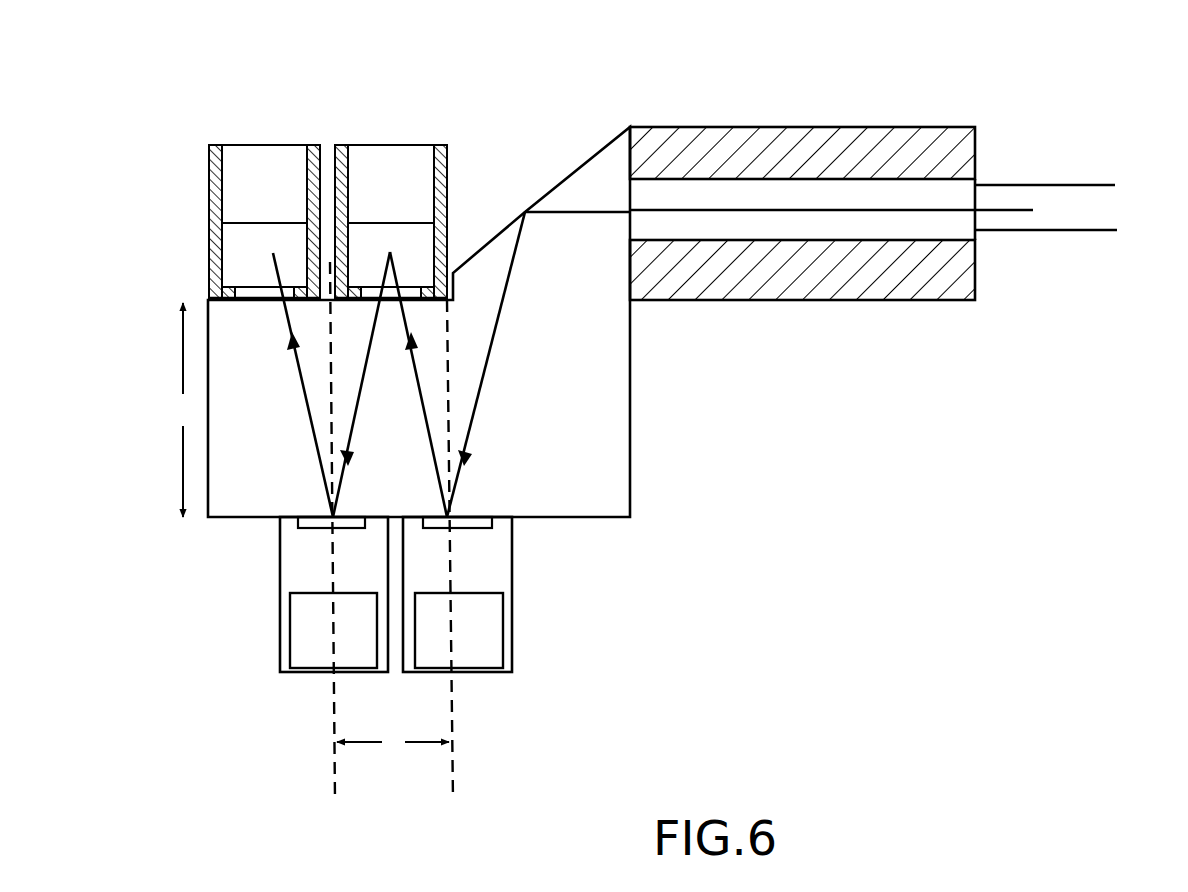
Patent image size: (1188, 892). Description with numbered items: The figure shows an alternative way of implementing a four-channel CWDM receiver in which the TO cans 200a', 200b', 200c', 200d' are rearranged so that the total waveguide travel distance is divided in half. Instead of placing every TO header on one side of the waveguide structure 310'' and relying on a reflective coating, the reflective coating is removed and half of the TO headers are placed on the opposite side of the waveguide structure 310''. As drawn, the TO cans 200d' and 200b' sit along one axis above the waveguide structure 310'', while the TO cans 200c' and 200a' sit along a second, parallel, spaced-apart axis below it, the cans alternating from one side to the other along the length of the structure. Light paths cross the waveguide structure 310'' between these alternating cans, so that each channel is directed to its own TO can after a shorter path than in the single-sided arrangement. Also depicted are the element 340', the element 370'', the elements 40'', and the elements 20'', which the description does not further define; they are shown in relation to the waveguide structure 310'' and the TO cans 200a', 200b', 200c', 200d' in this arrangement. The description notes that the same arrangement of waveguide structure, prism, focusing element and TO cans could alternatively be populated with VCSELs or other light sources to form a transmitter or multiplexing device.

The TO can 200d' is at (256, 173).
The TO can 200b' is at (385, 173).
The TO can 200c' is at (270, 597).
The TO can 200a' is at (525, 597).
The bi-directional optical fiber collimator 340' is at (802, 166).
The optical fibers 370'' is at (1066, 177).
The waveguide structure 310'' is at (462, 322).
The optical filter 40'' is at (407, 558).
The optical fiber / optical axis 20'' is at (387, 531).